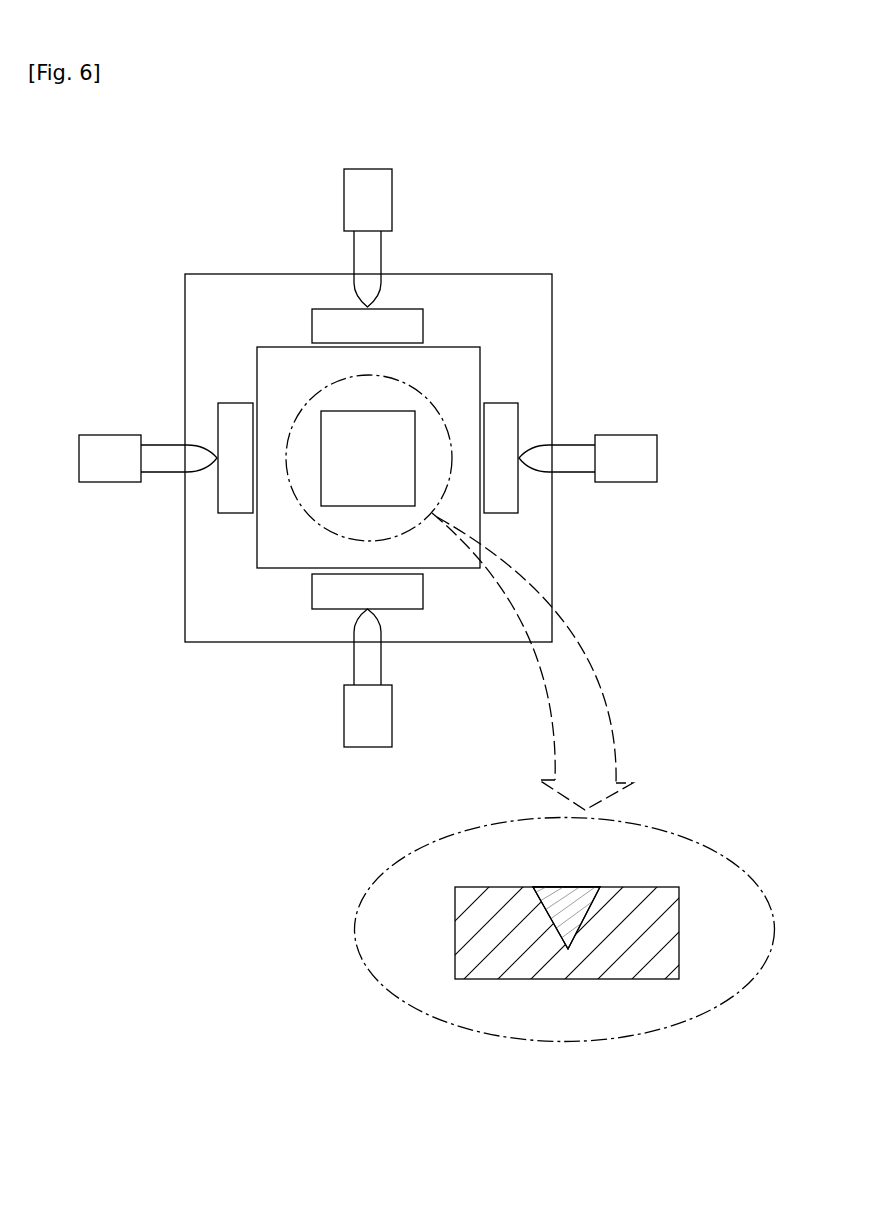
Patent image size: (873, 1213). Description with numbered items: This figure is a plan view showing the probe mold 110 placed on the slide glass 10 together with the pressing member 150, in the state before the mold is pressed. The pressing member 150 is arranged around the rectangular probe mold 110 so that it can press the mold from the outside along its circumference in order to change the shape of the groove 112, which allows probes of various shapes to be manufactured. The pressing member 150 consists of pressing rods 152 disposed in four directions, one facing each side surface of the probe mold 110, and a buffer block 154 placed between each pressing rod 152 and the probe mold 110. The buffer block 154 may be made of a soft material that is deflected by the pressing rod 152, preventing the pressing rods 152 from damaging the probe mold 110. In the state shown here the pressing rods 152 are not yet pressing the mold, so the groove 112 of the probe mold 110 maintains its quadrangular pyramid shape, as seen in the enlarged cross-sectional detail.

The slide glass 10 is at (525, 274).
The probe mold 110 is at (480, 362).
The groove 112 is at (415, 440).
The pressing member 150 is at (192, 171).
The pressing rod 152 is at (344, 182).
The buffer block 154 is at (320, 309).